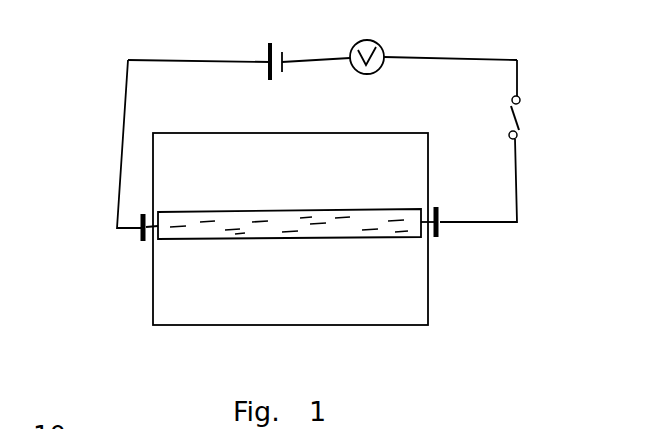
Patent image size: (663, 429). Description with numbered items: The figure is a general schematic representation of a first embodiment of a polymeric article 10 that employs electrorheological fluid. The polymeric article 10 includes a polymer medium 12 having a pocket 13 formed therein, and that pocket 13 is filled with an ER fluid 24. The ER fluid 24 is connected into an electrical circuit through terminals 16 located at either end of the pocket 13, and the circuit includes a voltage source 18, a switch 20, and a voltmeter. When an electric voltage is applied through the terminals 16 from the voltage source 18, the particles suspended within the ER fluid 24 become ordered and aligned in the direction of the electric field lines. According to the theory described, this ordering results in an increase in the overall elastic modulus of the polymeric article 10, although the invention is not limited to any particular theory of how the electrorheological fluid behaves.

The polymeric article 10 is at (108, 90).
The polymer medium 12 is at (383, 132).
The pocket 13 is at (380, 210).
The terminals 16 is at (138, 233).
The voltage source 18 is at (282, 38).
The switch 20 is at (522, 112).
The ER fluid 24 is at (352, 228).